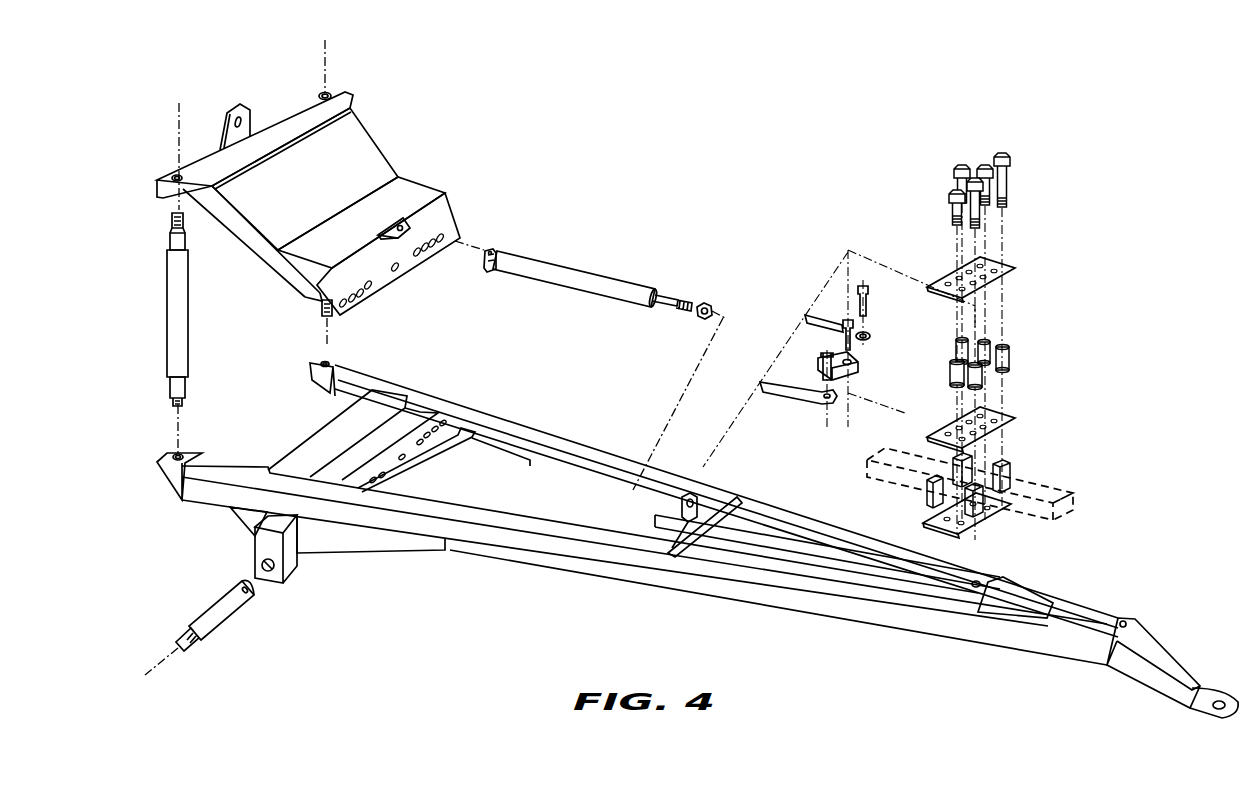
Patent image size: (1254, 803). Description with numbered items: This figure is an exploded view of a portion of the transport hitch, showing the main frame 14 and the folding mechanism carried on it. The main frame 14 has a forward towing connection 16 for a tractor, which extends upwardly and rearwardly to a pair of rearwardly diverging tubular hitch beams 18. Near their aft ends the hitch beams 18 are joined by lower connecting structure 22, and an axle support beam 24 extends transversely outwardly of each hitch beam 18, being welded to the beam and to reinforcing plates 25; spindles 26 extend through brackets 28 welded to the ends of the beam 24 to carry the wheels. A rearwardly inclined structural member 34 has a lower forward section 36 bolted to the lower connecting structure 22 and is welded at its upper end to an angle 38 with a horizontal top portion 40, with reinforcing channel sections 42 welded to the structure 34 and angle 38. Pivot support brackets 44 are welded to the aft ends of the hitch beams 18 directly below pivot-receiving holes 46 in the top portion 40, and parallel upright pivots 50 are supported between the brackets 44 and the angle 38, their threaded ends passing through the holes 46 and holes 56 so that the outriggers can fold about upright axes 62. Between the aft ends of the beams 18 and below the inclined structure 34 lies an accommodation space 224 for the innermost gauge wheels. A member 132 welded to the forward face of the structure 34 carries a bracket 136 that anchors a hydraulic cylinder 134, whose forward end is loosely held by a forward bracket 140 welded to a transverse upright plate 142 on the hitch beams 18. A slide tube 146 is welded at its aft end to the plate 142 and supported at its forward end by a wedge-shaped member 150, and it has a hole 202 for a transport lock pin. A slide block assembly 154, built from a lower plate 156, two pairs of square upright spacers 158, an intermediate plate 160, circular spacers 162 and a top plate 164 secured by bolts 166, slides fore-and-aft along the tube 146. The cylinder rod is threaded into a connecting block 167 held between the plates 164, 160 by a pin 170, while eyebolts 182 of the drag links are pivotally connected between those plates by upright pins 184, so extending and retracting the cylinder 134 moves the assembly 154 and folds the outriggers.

The main frame 14 is at (677, 534).
The forward towing connection 16 is at (1172, 706).
The hitch beams 18 is at (787, 509).
The lower connecting structure 22 is at (430, 481).
The axle support beam 24 is at (291, 533).
The reinforcing plates 25 is at (240, 514).
The spindles 26 is at (231, 612).
The brackets 28 is at (281, 570).
The rearwardly inclined structural member 34 is at (369, 150).
The lower forward section 36 is at (440, 228).
The angle 38 is at (306, 98).
The top portion 40 is at (226, 152).
The reinforcing channel sections 42 is at (275, 277).
The pivot support brackets 44 is at (160, 484).
The pivot-receiving holes 46 is at (328, 92).
The upright pivots 50 is at (166, 303).
The holes 56 is at (175, 454).
The upright axes 62 is at (177, 113).
The member 132 is at (421, 186).
The hydraulic cylinder 134 is at (537, 262).
The bracket 136 is at (398, 224).
The forward bracket 140 is at (680, 506).
The transverse upright plate 142 is at (690, 548).
The slide tube 146 is at (840, 548).
The wedge-shaped member 150 is at (1022, 608).
The slide block assembly 154 is at (936, 337).
The lower plate 156 is at (990, 531).
The square upright spacers 158 is at (1010, 471).
The intermediate plate 160 is at (1010, 421).
The circular spacers 162 is at (1012, 362).
The top plate 164 is at (1007, 262).
The bolts 166 is at (988, 160).
The connecting block 167 is at (830, 355).
The pin 170 is at (847, 317).
The eyebolts 182 is at (831, 315).
The upright pins 184 is at (869, 312).
The hole 202 is at (975, 592).
The accommodation space 224 is at (273, 408).